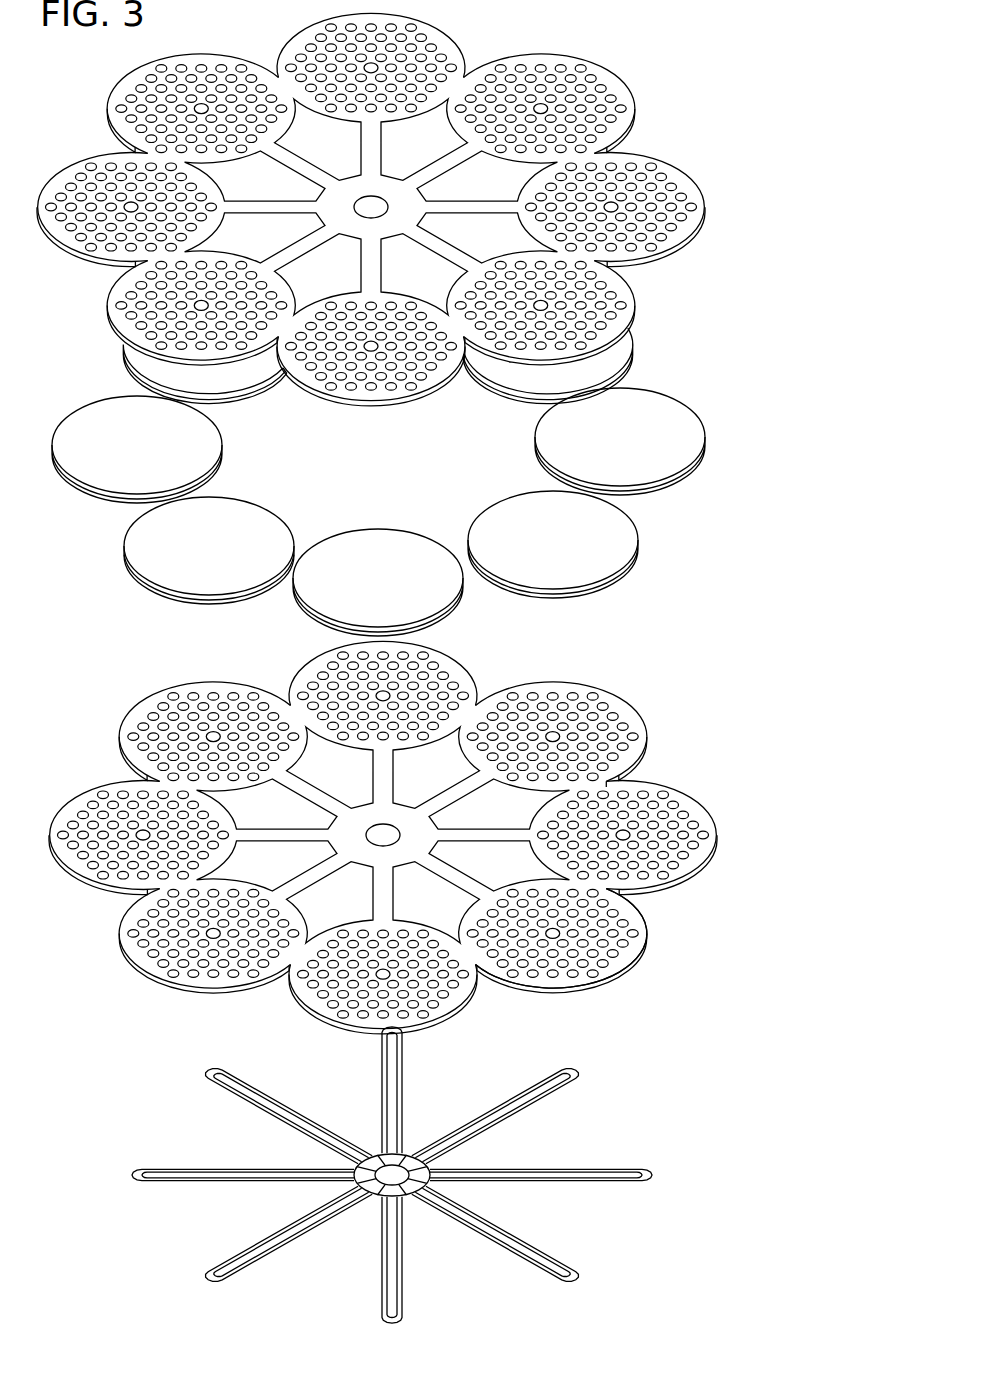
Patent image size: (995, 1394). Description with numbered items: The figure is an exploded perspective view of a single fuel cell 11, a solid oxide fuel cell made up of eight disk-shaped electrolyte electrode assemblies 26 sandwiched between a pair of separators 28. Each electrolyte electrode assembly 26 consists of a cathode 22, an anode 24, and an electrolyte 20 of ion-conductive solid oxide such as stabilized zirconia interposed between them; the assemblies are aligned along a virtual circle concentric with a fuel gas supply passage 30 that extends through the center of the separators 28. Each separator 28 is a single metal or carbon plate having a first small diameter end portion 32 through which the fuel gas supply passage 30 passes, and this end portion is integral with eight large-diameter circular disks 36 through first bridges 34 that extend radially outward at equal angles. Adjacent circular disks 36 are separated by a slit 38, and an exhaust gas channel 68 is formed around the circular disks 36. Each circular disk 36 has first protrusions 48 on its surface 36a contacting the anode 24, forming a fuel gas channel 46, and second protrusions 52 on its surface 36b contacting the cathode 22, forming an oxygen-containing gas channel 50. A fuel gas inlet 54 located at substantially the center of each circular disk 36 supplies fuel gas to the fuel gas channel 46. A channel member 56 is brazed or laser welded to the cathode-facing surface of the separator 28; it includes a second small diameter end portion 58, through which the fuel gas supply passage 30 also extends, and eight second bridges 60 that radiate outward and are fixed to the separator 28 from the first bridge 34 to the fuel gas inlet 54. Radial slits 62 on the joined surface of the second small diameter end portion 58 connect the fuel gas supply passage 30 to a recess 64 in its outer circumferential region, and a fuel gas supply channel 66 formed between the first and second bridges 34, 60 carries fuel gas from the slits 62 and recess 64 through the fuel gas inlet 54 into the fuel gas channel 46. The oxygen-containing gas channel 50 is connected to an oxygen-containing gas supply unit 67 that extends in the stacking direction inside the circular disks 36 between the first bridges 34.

The fuel cell 11 is at (588, 11).
The separator 28 is at (669, 49).
The electrolyte electrode assembly 26 is at (402, 598).
The cathode 22 is at (188, 546).
The electrolyte 20 is at (188, 571).
The anode 24 is at (188, 579).
The circular disk 36 is at (410, 661).
The surface 36a is at (602, 938).
The surface 36b is at (432, 998).
The fuel gas channel 46 is at (687, 838).
The slit 38 is at (116, 835).
The exhaust gas channel 68 is at (204, 965).
The first protrusions 48 is at (600, 737).
The second protrusions 52 is at (675, 781).
The fuel gas inlet 54 is at (563, 692).
The oxygen-containing gas channel 50 is at (553, 951).
The fuel gas supply passage 30 is at (378, 833).
The first bridge 34 is at (436, 767).
The first small diameter end portion 32 is at (499, 835).
The oxygen-containing gas supply unit 67 is at (322, 873).
The channel member 56 is at (574, 1057).
The recess 64 is at (373, 1200).
The slits 62 is at (420, 1171).
The second bridge 60 is at (545, 1167).
The fuel gas supply channel 66 is at (222, 1180).
The second small diameter end portion 58 is at (422, 1136).